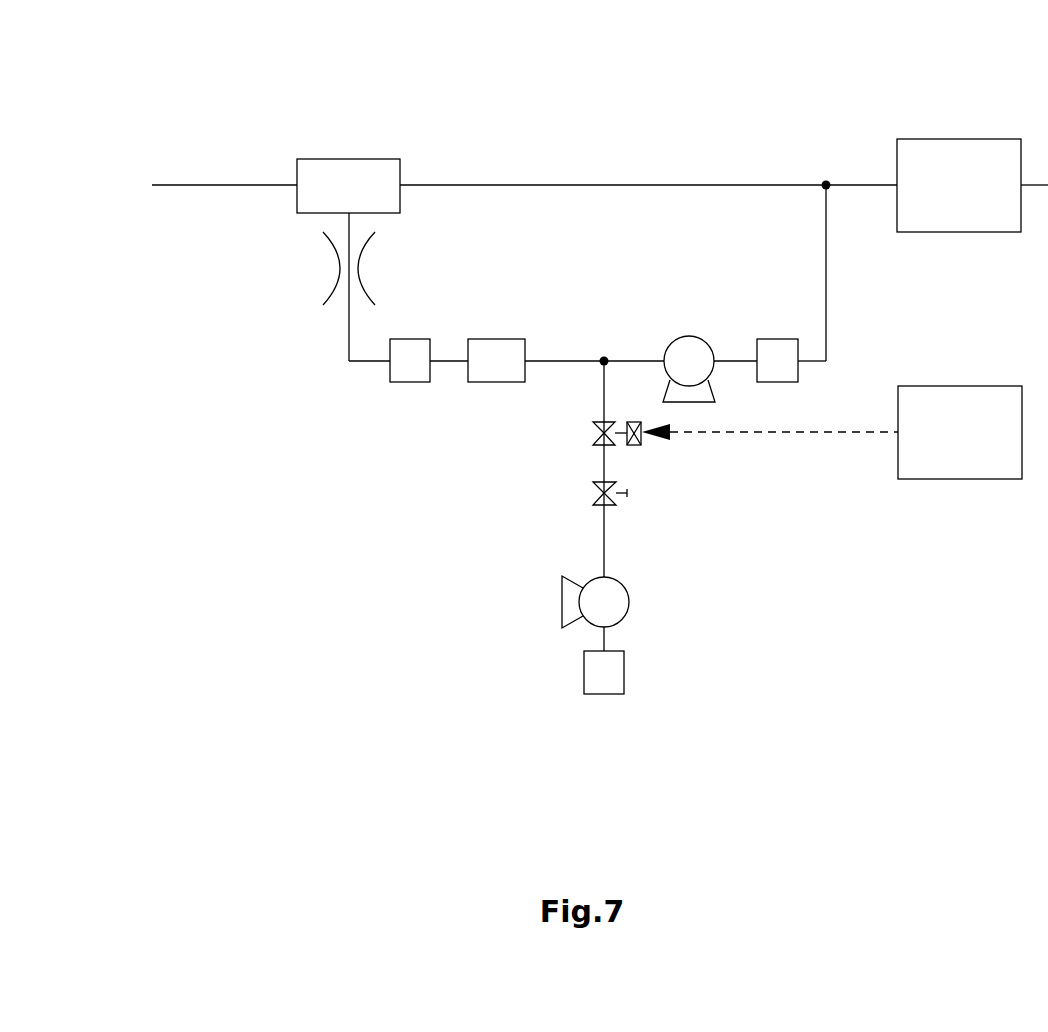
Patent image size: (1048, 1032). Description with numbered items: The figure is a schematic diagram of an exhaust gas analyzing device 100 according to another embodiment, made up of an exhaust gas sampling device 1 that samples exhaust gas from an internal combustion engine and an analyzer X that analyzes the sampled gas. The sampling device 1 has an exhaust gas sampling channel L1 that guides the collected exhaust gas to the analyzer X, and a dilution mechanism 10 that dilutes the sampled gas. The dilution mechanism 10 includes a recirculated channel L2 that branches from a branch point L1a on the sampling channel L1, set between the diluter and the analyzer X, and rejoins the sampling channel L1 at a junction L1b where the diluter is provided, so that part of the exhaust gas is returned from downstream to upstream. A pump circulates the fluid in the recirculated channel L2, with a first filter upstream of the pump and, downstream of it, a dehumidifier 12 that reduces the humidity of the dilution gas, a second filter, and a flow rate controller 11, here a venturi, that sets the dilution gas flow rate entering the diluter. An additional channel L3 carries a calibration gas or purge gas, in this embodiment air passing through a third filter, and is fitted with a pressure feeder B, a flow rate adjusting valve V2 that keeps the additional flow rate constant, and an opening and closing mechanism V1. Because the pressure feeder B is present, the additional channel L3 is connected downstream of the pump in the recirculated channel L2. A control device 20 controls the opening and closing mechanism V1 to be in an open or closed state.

The exhaust gas analyzing device 100 is at (232, 92).
The exhaust gas sampling device 1 is at (157, 238).
The dilution mechanism 10 is at (340, 410).
The flow rate controller 11 is at (340, 268).
The dehumidifier 12 is at (494, 383).
The control device 20 is at (958, 480).
The exhaust gas sampling channel L1 is at (199, 186).
The branch point L1a is at (827, 169).
The junction L1b is at (348, 186).
The recirculated channel L2 is at (827, 304).
The additional channel L3 is at (603, 533).
The opening and closing mechanism V1 is at (593, 437).
The flow rate adjusting valve V2 is at (593, 497).
The pressure feeder B is at (562, 604).
The analyzer X is at (960, 139).